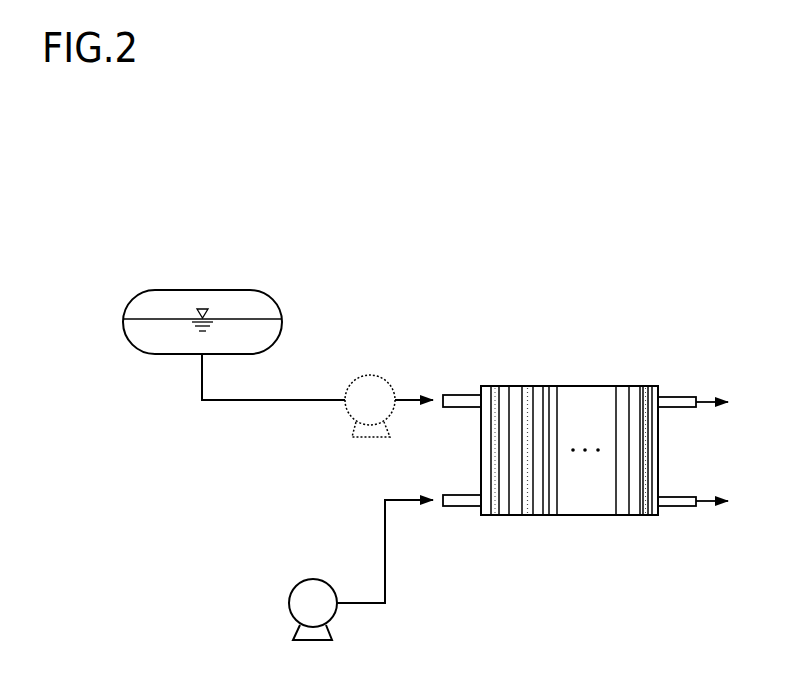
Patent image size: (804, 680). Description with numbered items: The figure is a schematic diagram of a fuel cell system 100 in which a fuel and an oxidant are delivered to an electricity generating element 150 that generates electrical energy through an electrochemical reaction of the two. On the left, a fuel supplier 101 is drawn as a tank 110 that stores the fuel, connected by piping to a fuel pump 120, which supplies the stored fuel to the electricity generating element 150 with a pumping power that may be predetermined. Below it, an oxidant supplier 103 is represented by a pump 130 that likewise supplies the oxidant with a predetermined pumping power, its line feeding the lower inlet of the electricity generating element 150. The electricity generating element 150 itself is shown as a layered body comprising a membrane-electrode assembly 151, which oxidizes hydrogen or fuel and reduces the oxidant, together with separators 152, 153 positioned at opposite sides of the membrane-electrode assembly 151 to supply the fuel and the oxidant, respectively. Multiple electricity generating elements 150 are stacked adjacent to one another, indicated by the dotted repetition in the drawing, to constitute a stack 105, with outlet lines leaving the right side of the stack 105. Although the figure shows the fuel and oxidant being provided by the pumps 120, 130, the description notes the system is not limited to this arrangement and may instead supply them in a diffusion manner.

The fuel cell system 100 is at (569, 433).
The fuel supplier 101 is at (107, 297).
The oxidant supplier 103 is at (280, 596).
The stack 105 is at (618, 376).
The tank 110 is at (209, 290).
The fuel pump 120 is at (372, 375).
The pump 130 is at (297, 582).
The electricity generating element 150 is at (531, 508).
The membrane-electrode assembly 151 is at (528, 517).
The separator 152 is at (519, 517).
The separator 153 is at (563, 487).